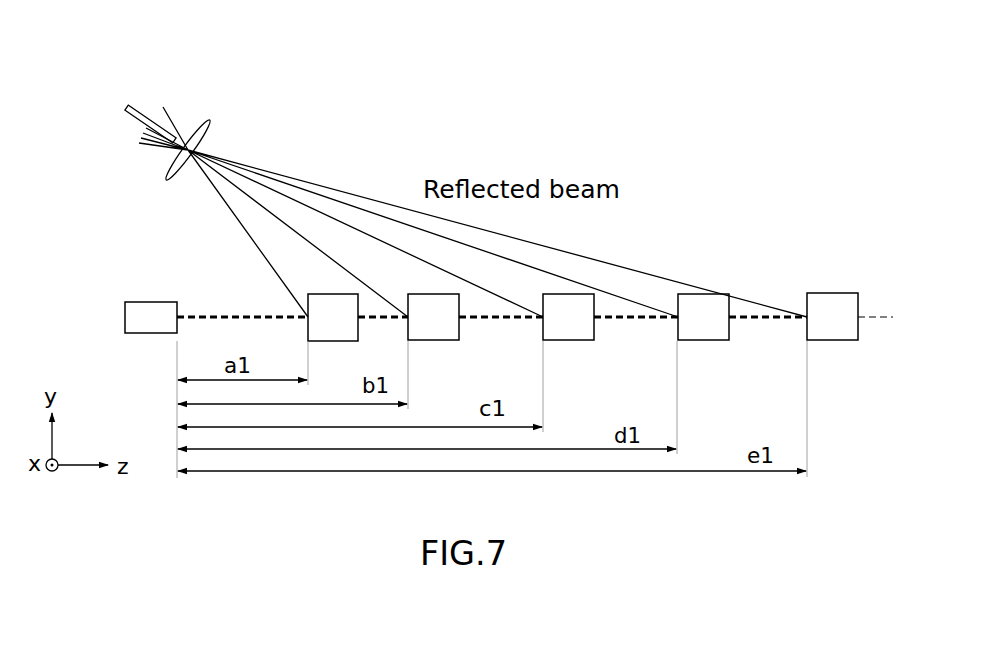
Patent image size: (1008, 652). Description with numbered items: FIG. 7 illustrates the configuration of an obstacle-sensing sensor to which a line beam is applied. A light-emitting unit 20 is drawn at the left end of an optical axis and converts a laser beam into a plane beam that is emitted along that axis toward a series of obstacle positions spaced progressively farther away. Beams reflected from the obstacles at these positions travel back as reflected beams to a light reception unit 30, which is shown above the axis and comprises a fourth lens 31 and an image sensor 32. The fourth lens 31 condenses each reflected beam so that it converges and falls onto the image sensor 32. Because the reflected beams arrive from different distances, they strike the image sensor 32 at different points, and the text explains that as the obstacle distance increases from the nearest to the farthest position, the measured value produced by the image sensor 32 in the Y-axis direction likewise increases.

The light-emitting unit 20 is at (152, 302).
The light reception unit 30 is at (187, 94).
The fourth lens 31 is at (211, 118).
The image sensor 32 is at (166, 98).